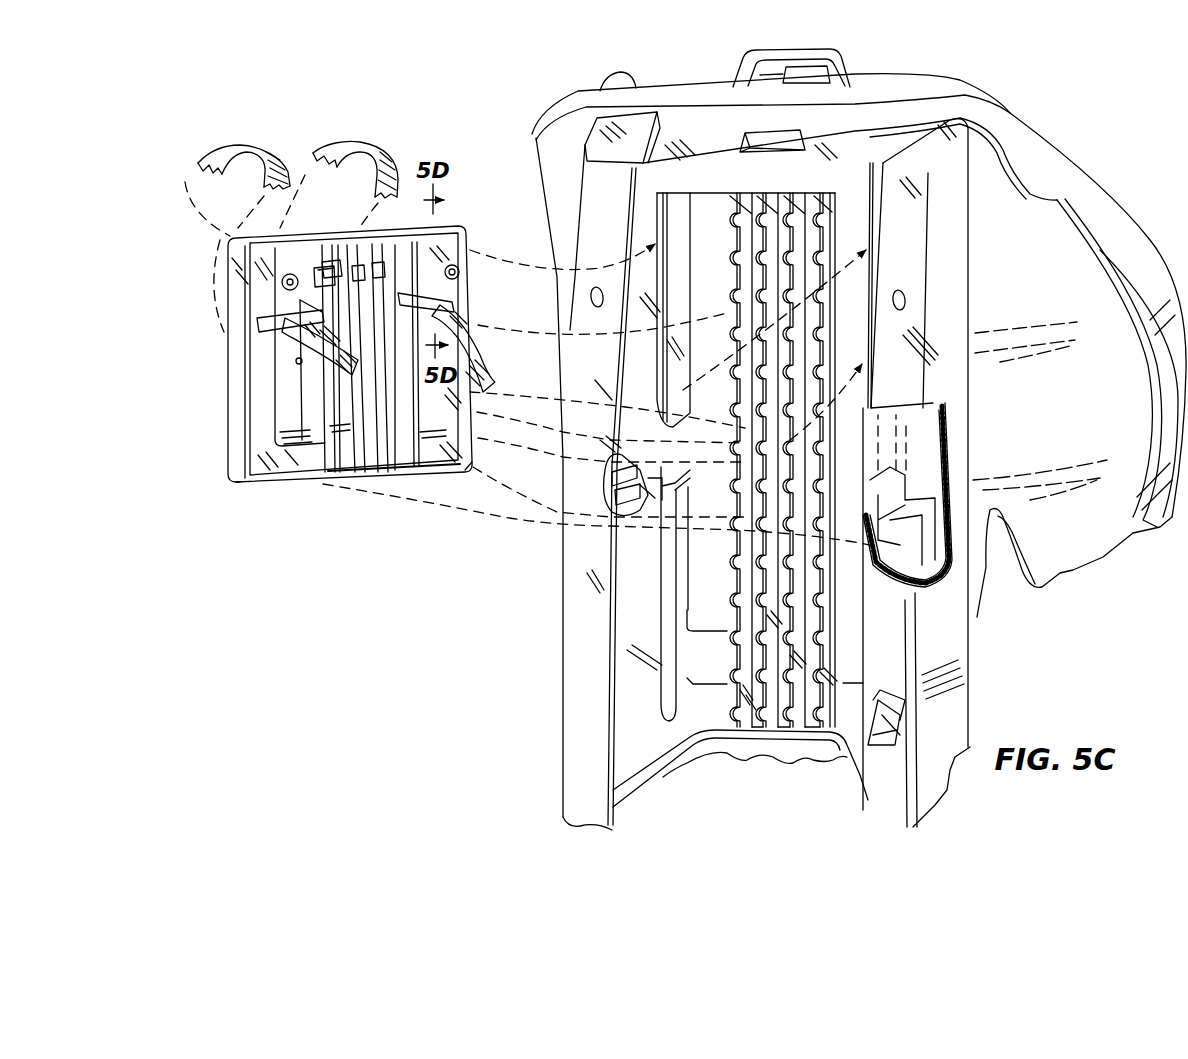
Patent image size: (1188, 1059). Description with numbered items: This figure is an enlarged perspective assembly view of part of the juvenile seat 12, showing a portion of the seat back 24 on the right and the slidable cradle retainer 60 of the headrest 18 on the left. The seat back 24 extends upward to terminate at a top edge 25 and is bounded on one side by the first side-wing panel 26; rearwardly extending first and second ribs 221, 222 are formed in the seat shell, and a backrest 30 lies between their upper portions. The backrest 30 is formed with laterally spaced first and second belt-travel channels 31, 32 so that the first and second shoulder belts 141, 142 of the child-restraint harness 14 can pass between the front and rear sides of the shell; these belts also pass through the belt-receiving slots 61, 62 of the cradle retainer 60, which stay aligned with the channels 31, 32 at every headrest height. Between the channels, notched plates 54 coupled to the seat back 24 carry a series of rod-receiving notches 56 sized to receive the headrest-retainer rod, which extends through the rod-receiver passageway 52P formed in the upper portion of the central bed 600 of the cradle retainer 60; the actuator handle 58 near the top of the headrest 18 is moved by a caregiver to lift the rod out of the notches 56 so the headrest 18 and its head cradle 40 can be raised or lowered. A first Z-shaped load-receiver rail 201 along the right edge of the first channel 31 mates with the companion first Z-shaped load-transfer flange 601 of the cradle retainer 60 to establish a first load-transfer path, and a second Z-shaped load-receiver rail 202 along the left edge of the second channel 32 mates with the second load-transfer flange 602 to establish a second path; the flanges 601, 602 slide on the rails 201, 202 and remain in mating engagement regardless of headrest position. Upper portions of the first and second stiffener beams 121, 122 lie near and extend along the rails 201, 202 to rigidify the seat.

The juvenile seat 12 is at (1082, 155).
The child-restraint harness 14 is at (306, 94).
The headrest 18 is at (992, 84).
The seat back 24 is at (972, 167).
The top edge 25 is at (628, 92).
The first side-wing panel 26 is at (1065, 255).
The backrest 30 is at (726, 185).
The first belt-travel channel 31 is at (850, 215).
The second belt-travel channel 32 is at (703, 215).
The head cradle 40 is at (1015, 107).
The rod-receiver passageway 52P is at (317, 262).
The notched plate 54 is at (822, 205).
The rod-receiving notches 56 is at (735, 302).
The actuator handle 58 is at (843, 65).
The slidable cradle retainer 60 is at (226, 357).
The belt-receiving slot 61 is at (256, 325).
The belt-receiving slot 62 is at (457, 310).
The first stiffener beam 121 is at (905, 614).
The second stiffener beam 122 is at (652, 455).
The first shoulder belt 141 is at (258, 150).
The second shoulder belt 142 is at (368, 142).
The first load-receiver rail 201 is at (920, 477).
The second load-receiver rail 202 is at (683, 222).
The first rib 221 is at (892, 762).
The second rib 222 is at (576, 717).
The central bed 600 is at (318, 488).
The first load-transfer flange 601 is at (242, 484).
The second load-transfer flange 602 is at (465, 472).